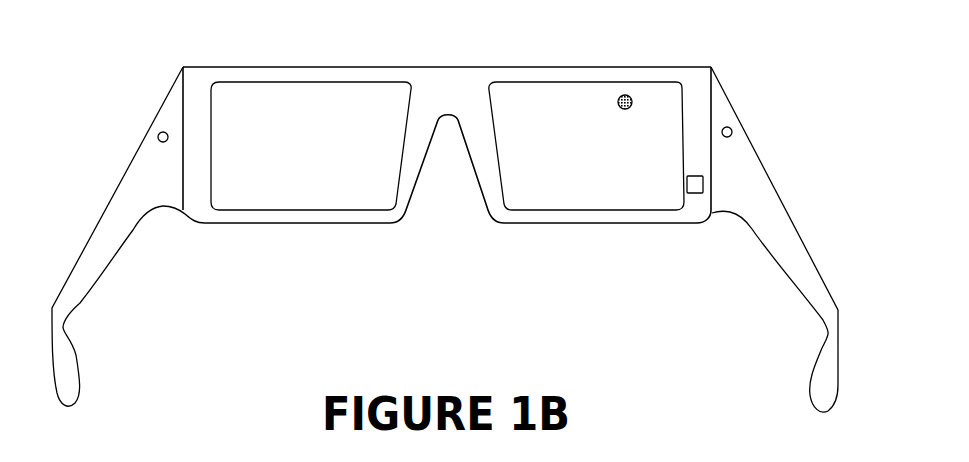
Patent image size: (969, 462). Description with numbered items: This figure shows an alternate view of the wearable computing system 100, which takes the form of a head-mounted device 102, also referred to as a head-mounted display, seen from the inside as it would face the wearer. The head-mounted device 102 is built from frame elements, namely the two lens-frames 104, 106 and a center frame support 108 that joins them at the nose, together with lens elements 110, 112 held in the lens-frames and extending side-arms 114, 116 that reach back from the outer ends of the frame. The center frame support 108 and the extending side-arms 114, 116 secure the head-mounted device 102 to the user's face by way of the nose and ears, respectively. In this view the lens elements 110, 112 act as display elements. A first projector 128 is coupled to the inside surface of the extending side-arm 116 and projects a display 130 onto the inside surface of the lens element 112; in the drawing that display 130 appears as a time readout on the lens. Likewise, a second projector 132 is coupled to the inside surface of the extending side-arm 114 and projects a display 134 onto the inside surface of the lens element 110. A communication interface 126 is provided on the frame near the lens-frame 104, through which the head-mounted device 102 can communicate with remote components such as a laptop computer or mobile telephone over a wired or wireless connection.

The wearable computing system 100 is at (684, 330).
The head-mounted device 102 is at (228, 49).
The lens-frame 104 is at (658, 223).
The lens-frame 106 is at (232, 223).
The center frame support 108 is at (445, 67).
The lens element 110 is at (552, 200).
The lens element 112 is at (327, 200).
The extending side-arm 114 is at (767, 172).
The extending side-arm 116 is at (108, 204).
The communication interface 126 is at (693, 193).
The first projector 128 is at (158, 136).
The display 130 is at (300, 113).
The second projector 132 is at (730, 127).
The display 134 is at (621, 110).